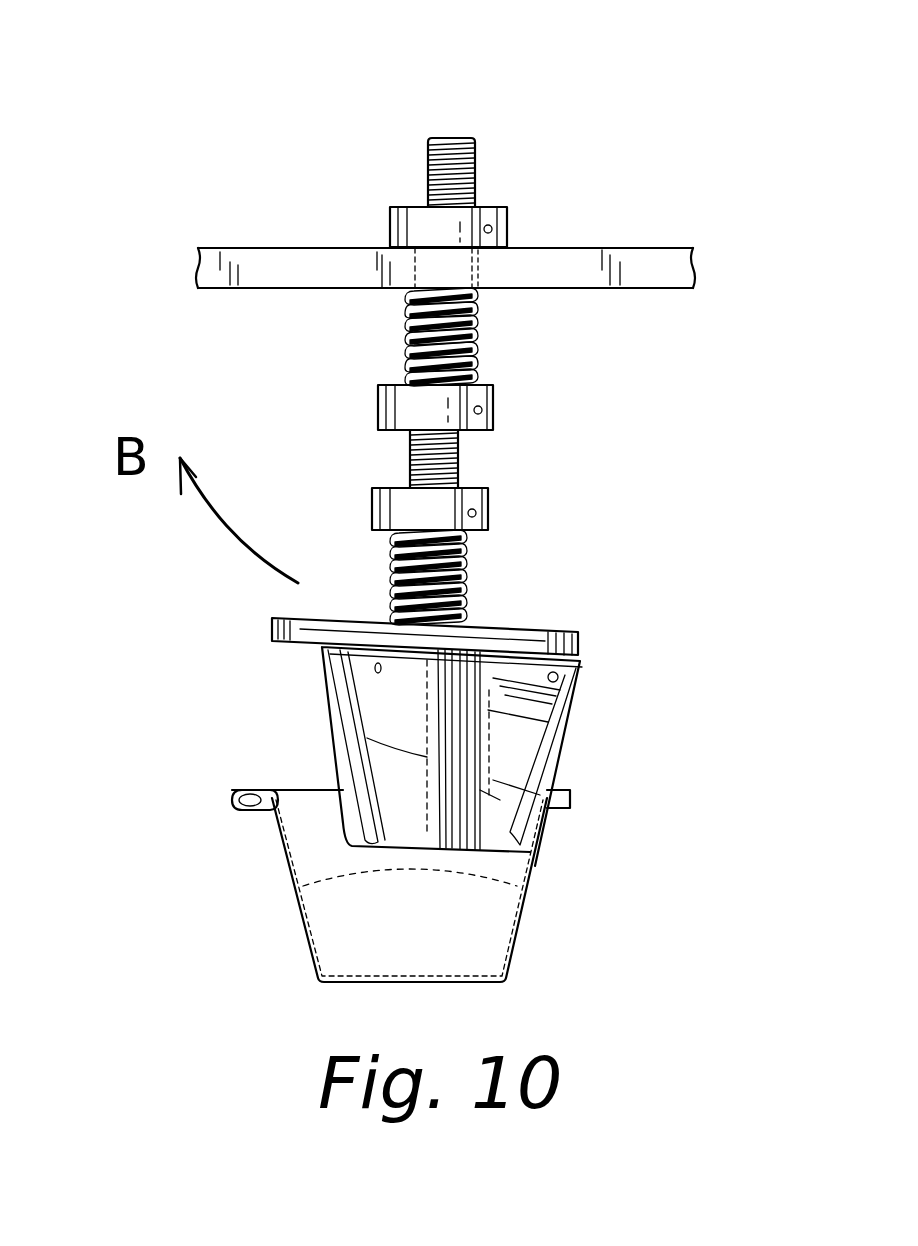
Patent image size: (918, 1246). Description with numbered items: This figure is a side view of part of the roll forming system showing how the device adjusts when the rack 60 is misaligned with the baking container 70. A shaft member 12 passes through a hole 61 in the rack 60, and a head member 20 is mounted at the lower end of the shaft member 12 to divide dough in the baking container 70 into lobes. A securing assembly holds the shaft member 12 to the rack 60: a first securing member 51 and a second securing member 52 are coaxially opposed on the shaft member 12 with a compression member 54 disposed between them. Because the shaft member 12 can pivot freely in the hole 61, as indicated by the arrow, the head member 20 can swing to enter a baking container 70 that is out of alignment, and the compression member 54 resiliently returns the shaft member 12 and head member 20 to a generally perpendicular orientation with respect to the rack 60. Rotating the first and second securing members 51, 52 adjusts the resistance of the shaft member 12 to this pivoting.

The shaft member 12 is at (473, 160).
The first securing member 51 is at (392, 210).
The rack 60 is at (628, 250).
The hole 61 is at (480, 263).
The second securing member 52 is at (478, 347).
The compression member 54 is at (495, 415).
The head member 20 is at (545, 716).
The baking container 70 is at (297, 935).